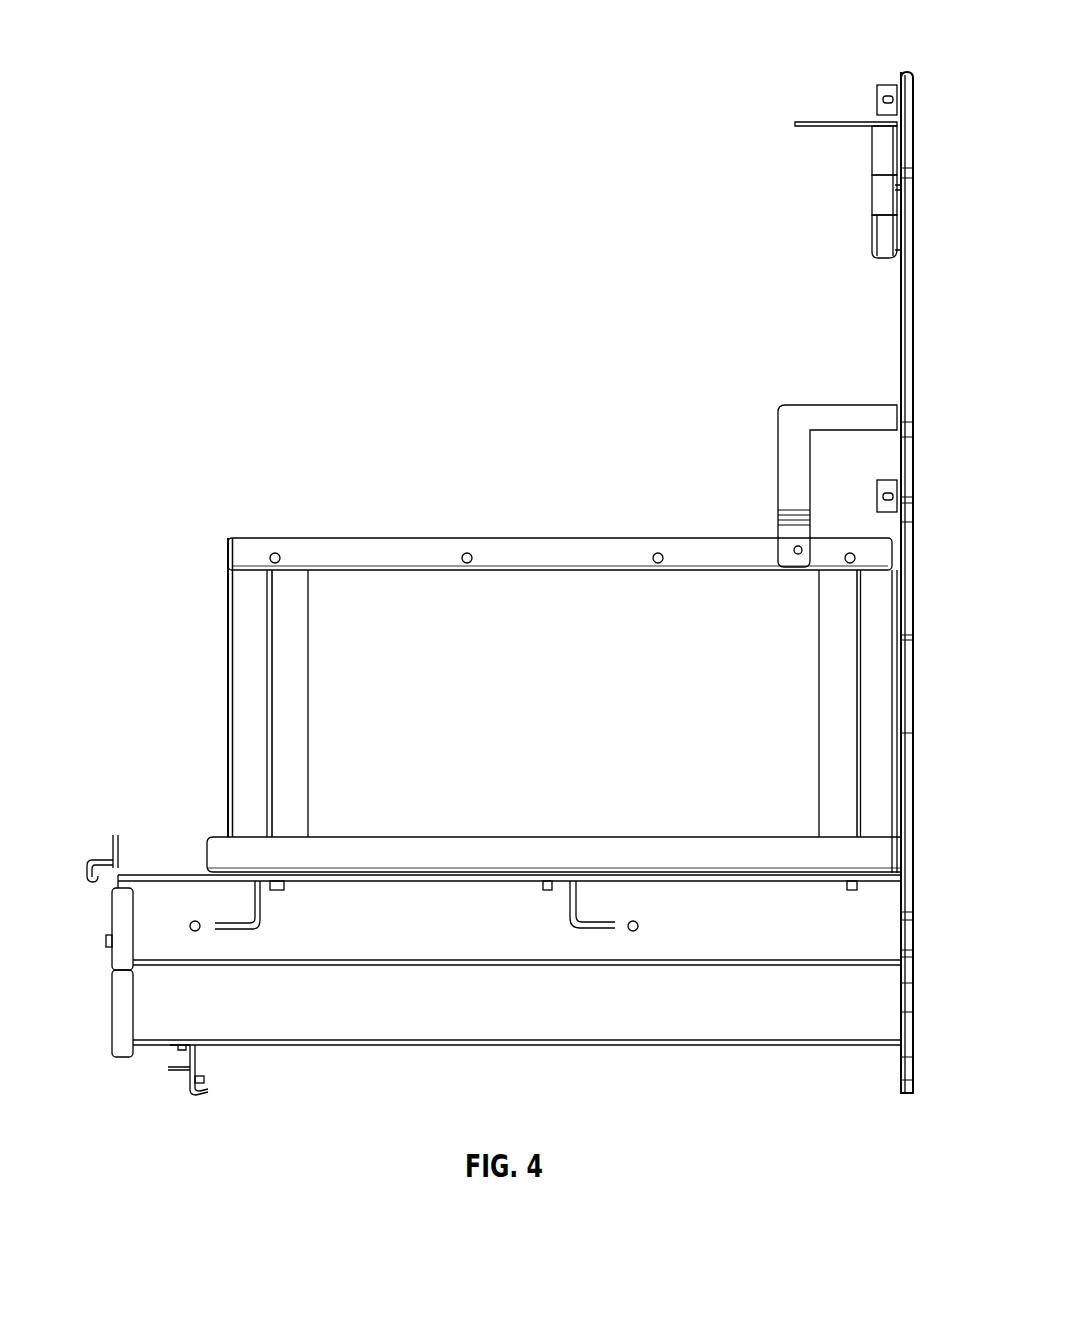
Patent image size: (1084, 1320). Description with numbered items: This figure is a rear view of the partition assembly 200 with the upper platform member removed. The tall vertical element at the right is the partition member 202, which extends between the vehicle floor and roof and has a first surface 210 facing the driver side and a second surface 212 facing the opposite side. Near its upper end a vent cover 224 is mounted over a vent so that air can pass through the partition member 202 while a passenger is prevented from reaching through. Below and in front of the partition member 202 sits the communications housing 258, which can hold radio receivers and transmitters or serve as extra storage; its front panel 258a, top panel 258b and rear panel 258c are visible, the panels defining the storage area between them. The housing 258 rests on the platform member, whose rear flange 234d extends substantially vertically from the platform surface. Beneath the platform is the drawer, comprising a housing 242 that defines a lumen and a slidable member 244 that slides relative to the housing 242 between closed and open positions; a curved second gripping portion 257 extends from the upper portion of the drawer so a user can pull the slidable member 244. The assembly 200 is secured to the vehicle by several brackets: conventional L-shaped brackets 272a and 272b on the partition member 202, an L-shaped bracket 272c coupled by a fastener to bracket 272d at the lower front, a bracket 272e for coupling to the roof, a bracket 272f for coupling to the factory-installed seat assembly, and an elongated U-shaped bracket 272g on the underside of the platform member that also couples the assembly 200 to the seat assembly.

The partition assembly 200 is at (454, 384).
The partition member 202 is at (903, 298).
The first surface 210 is at (900, 355).
The second surface 212 is at (913, 405).
The vent cover 224 is at (880, 228).
The rear flange 234d is at (218, 842).
The housing 242 is at (785, 950).
The slidable member 244 is at (110, 1012).
The second gripping portion 257 is at (97, 870).
The communications housing 258 is at (516, 651).
The front panel 258a is at (237, 612).
The top panel 258b is at (525, 537).
The rear panel 258c is at (320, 718).
The L-shaped bracket 272a is at (885, 88).
The L-shaped bracket 272b is at (888, 485).
The L-shaped bracket 272c is at (198, 1055).
The bracket 272d is at (180, 1071).
The bracket 272e is at (800, 121).
The bracket 272f is at (788, 465).
The elongated U-shaped bracket 272g is at (600, 927).